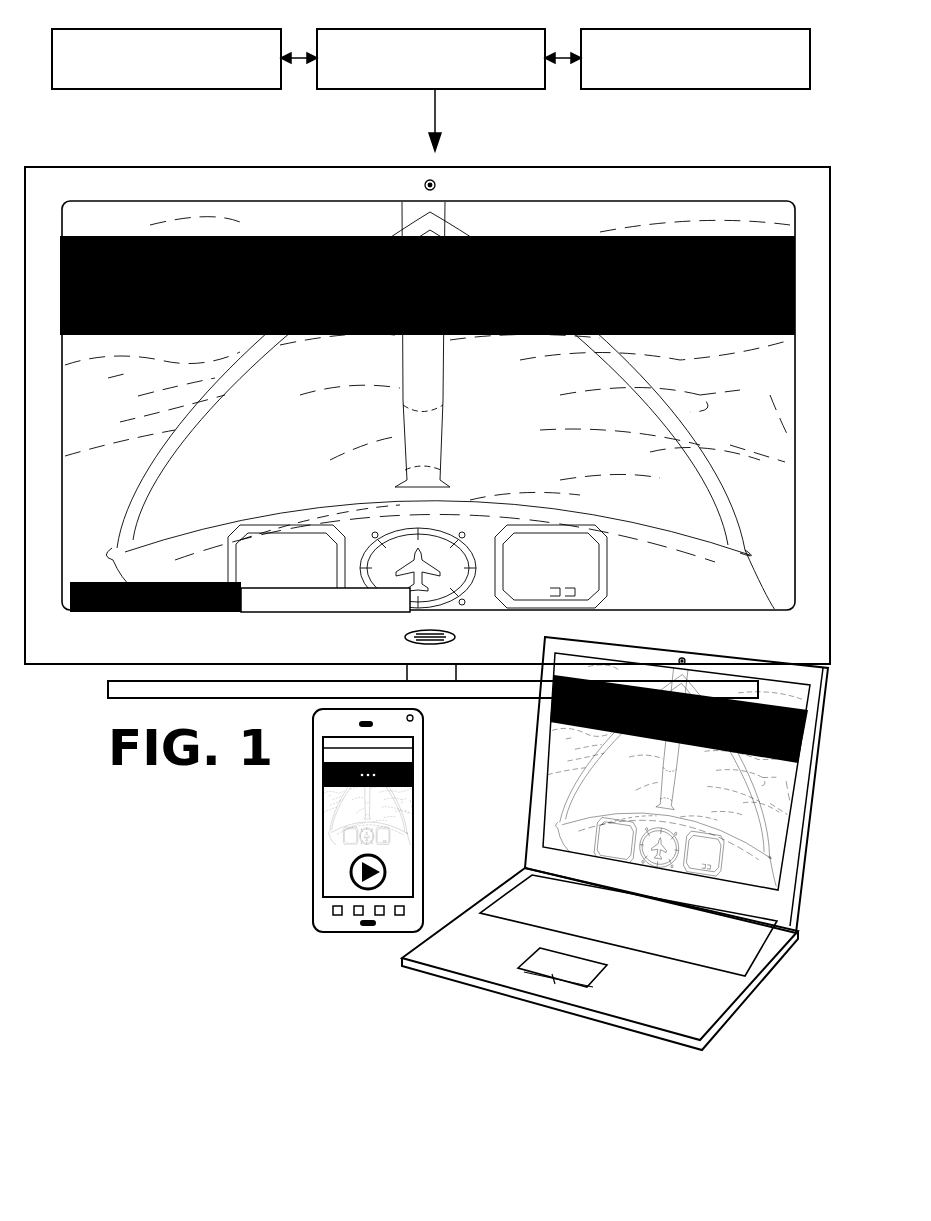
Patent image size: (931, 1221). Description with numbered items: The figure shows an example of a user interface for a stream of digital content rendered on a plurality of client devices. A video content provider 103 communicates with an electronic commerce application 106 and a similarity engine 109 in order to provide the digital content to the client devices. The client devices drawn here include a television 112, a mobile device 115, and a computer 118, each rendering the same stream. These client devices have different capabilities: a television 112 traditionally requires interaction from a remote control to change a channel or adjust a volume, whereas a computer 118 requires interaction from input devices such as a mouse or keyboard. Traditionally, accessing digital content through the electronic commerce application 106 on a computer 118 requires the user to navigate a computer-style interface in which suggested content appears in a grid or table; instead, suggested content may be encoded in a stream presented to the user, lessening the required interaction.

The video content provider 103 is at (431, 59).
The electronic commerce application 106 is at (166, 59).
The similarity engine 109 is at (695, 59).
The television 112 is at (727, 167).
The mobile device 115 is at (423, 737).
The computer 118 is at (619, 641).